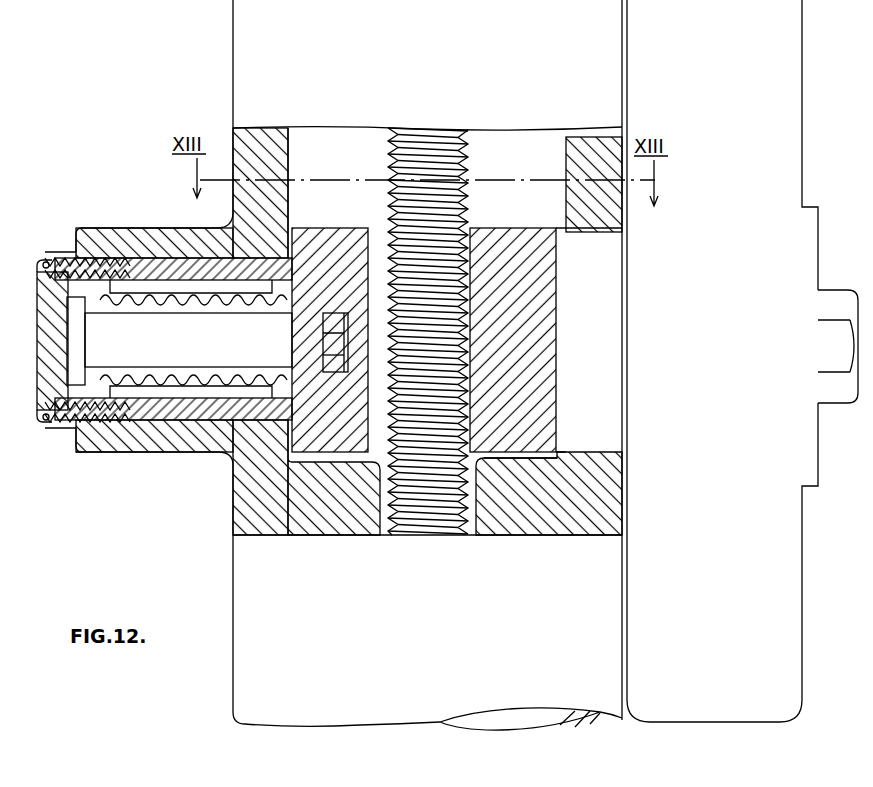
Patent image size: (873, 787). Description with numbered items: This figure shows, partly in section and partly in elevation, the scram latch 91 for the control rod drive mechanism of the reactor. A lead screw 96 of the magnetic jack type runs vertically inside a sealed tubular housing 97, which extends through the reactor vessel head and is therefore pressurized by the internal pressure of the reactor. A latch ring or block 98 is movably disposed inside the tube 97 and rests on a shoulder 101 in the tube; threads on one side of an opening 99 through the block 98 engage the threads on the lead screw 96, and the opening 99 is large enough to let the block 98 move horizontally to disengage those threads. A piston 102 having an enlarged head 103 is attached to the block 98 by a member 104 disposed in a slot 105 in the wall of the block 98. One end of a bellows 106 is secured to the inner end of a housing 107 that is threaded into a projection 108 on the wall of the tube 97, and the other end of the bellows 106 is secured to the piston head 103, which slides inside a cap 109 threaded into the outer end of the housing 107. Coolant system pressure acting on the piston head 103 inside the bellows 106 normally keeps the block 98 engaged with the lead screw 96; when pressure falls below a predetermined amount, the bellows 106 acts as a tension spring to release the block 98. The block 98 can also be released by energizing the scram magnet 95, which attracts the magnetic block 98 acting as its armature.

The scram latch 91 is at (206, 483).
The scram magnet 95 is at (795, 606).
The lead screw 96 is at (470, 172).
The tubular housing 97 is at (240, 42).
The latch ring or block 98 is at (518, 246).
The opening 99 is at (378, 240).
The shoulder 101 is at (500, 458).
The piston 102 is at (200, 344).
The piston head 103 is at (80, 326).
The member 104 is at (332, 338).
The slot 105 is at (341, 357).
The bellows 106 is at (140, 376).
The housing 107 is at (167, 265).
The projection 108 is at (92, 231).
The cap 109 is at (52, 375).